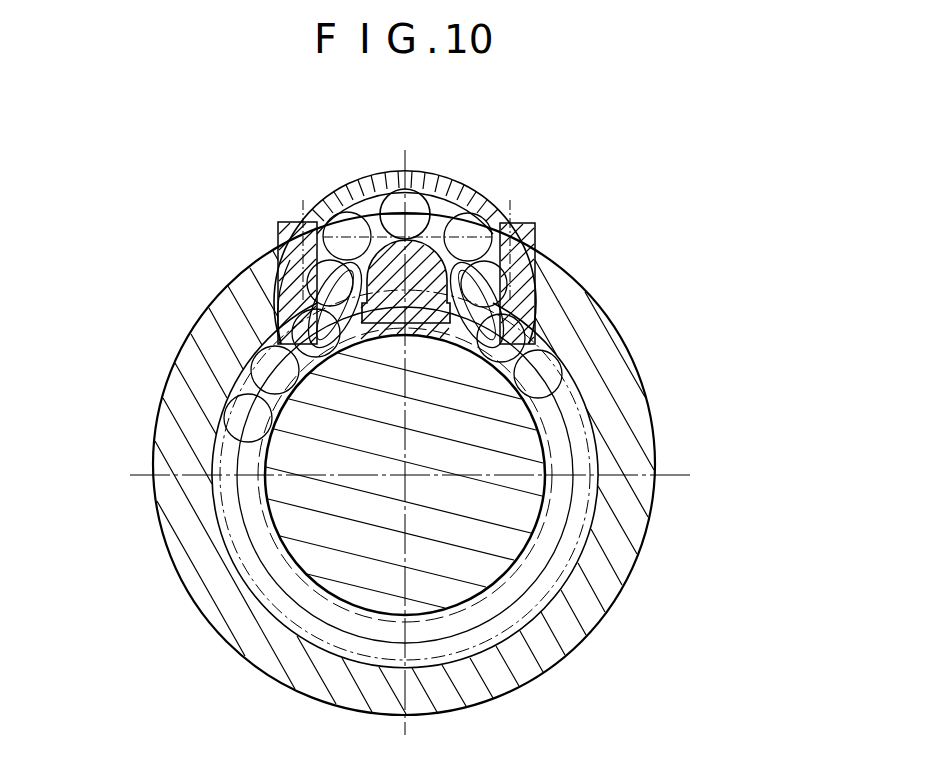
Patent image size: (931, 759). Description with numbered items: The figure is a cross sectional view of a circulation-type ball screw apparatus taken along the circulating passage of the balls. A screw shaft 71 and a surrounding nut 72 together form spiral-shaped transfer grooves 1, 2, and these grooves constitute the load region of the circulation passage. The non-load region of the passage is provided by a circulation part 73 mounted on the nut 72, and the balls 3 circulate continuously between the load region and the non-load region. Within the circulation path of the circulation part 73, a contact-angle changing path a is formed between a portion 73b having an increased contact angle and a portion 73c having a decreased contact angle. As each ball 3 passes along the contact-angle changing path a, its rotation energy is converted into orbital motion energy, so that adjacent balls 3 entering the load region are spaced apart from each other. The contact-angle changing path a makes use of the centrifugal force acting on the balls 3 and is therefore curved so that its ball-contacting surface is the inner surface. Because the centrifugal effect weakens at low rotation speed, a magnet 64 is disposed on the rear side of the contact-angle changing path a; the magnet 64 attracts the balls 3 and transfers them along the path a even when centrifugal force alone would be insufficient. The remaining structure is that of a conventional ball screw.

The transfer groove 1 is at (256, 462).
The transfer groove 2 is at (272, 387).
The balls 3 is at (541, 374).
The magnet 64 is at (428, 258).
The screw shaft 71 is at (473, 512).
The nut 72 is at (606, 577).
The circulation part 73 is at (472, 198).
The portion having an increased contact angle 73b is at (280, 221).
The portion having a decreased contact angle 73c is at (279, 325).
The contact-angle changing path a is at (357, 337).